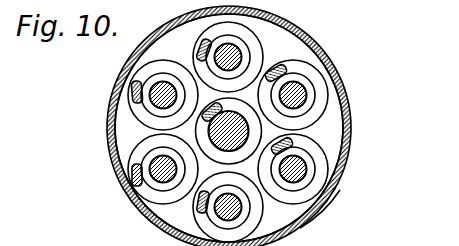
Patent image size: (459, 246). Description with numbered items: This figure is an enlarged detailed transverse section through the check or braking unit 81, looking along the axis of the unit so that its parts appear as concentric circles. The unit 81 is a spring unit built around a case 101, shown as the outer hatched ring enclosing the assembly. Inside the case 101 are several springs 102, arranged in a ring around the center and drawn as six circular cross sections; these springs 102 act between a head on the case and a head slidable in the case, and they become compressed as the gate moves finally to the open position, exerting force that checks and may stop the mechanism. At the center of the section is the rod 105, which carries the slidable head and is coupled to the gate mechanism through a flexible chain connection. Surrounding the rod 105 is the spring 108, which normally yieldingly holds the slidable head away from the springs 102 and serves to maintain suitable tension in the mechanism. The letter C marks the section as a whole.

The check or braking unit 81 is at (104, 95).
The case 101 is at (302, 229).
The cylinder block C is at (104, 168).
The springs 102 is at (267, 50).
The spring 108 is at (262, 132).
The rod 105 is at (232, 131).